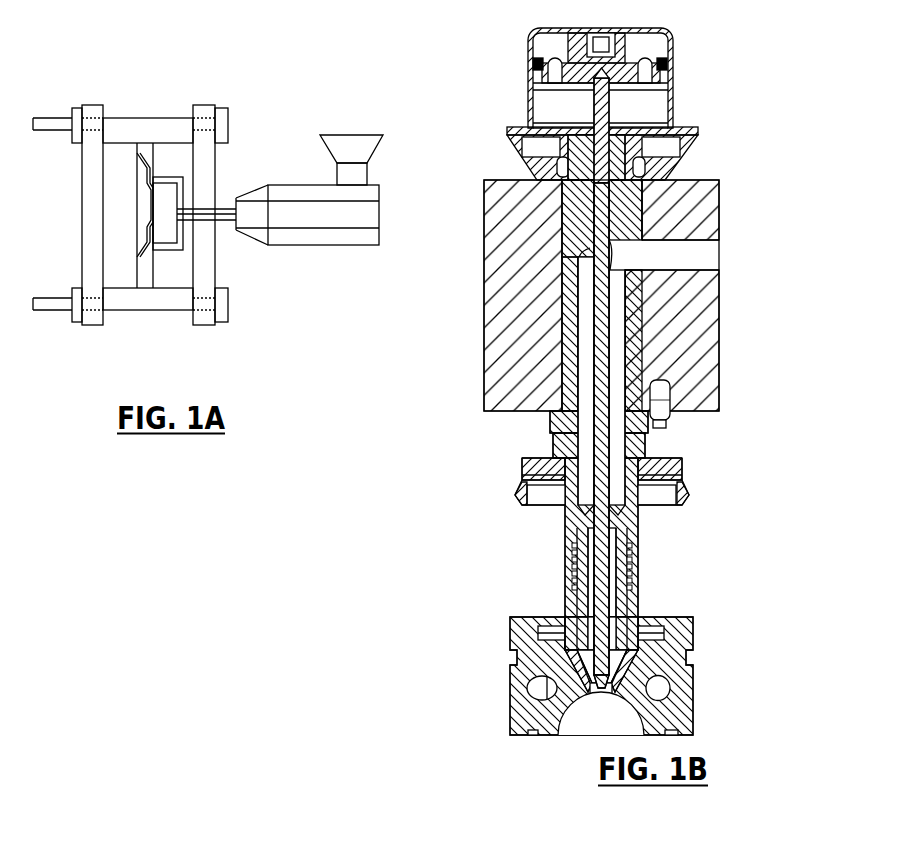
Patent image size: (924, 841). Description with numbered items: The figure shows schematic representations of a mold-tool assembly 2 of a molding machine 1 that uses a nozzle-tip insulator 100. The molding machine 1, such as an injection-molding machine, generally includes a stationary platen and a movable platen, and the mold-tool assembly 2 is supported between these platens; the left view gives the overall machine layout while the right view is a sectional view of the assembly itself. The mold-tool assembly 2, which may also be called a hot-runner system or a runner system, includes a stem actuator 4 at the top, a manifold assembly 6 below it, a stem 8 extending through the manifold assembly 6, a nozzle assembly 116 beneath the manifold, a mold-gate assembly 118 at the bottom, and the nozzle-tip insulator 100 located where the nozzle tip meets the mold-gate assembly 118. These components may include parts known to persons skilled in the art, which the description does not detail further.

In FIG. 1A, the molding machine 1 is at (285, 141).
In FIG. 1B, the molding machine 1 is at (858, 100).
In FIG. 1A, the mold-tool assembly 2 is at (175, 289).
In FIG. 1B, the mold-tool assembly 2 is at (862, 715).
In FIG. 1B, the stem actuator 4 is at (675, 92).
In FIG. 1B, the manifold assembly 6 is at (862, 300).
In FIG. 1B, the stem 8 is at (605, 450).
In FIG. 1B, the nozzle assembly 116 is at (638, 555).
In FIG. 1B, the mold-gate assembly 118 is at (692, 648).
In FIG. 1B, the nozzle-tip insulator 100 is at (697, 690).